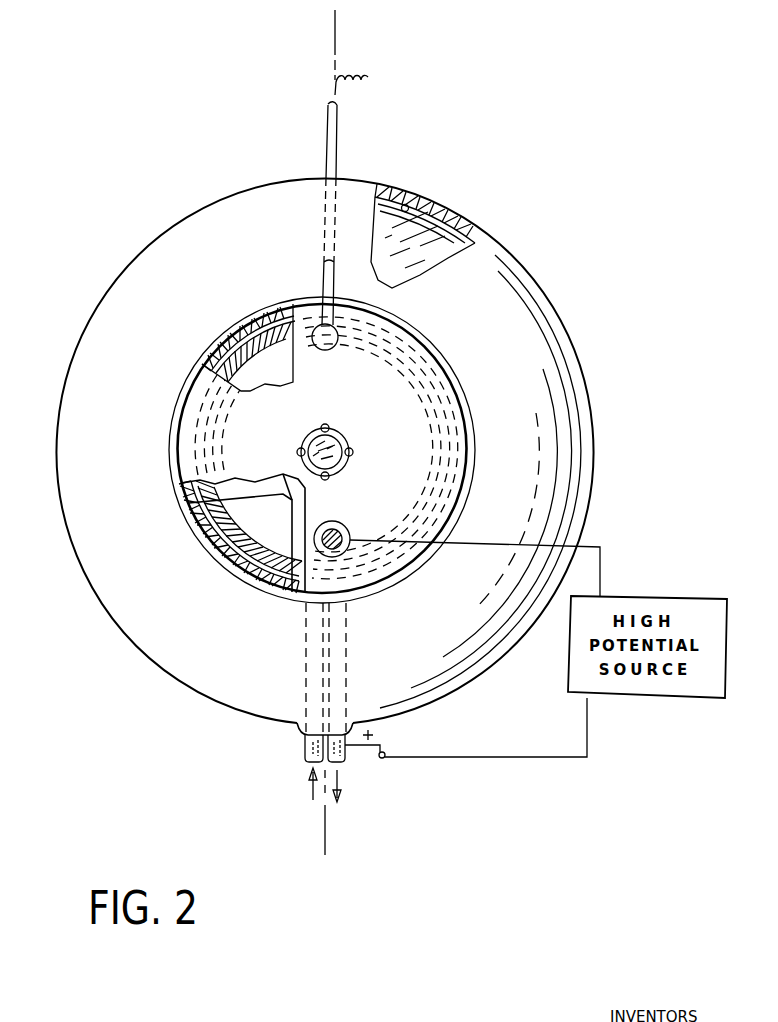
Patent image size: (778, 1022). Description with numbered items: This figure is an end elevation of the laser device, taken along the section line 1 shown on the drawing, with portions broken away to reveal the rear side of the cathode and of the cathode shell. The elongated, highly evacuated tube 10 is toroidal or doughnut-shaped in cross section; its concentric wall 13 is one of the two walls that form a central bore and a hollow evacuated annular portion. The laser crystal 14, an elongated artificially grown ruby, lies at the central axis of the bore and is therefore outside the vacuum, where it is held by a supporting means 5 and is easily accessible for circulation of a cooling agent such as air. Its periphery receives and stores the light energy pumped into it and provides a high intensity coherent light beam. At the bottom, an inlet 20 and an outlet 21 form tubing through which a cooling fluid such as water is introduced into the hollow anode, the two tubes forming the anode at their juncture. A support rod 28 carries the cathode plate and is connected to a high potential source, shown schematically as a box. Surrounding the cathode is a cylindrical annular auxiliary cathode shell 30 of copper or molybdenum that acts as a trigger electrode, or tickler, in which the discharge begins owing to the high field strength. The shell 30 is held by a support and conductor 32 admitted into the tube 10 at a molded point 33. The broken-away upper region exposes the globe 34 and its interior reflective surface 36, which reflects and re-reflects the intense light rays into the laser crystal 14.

The section line 1- 1 is at (338, 35).
The supporting means 5 is at (352, 457).
The evacuated tube 10 is at (264, 435).
The concentric wall 13 is at (268, 580).
The laser crystal 14 is at (328, 446).
The inlet 20 is at (303, 752).
The outlet 21 is at (348, 760).
The support rod 28 is at (345, 530).
The auxiliary cathode shell 30 is at (270, 508).
The support and conductor 32 is at (322, 279).
The admission point 33 is at (331, 350).
The globe 34 is at (440, 200).
The interior reflective surface 36 is at (405, 208).